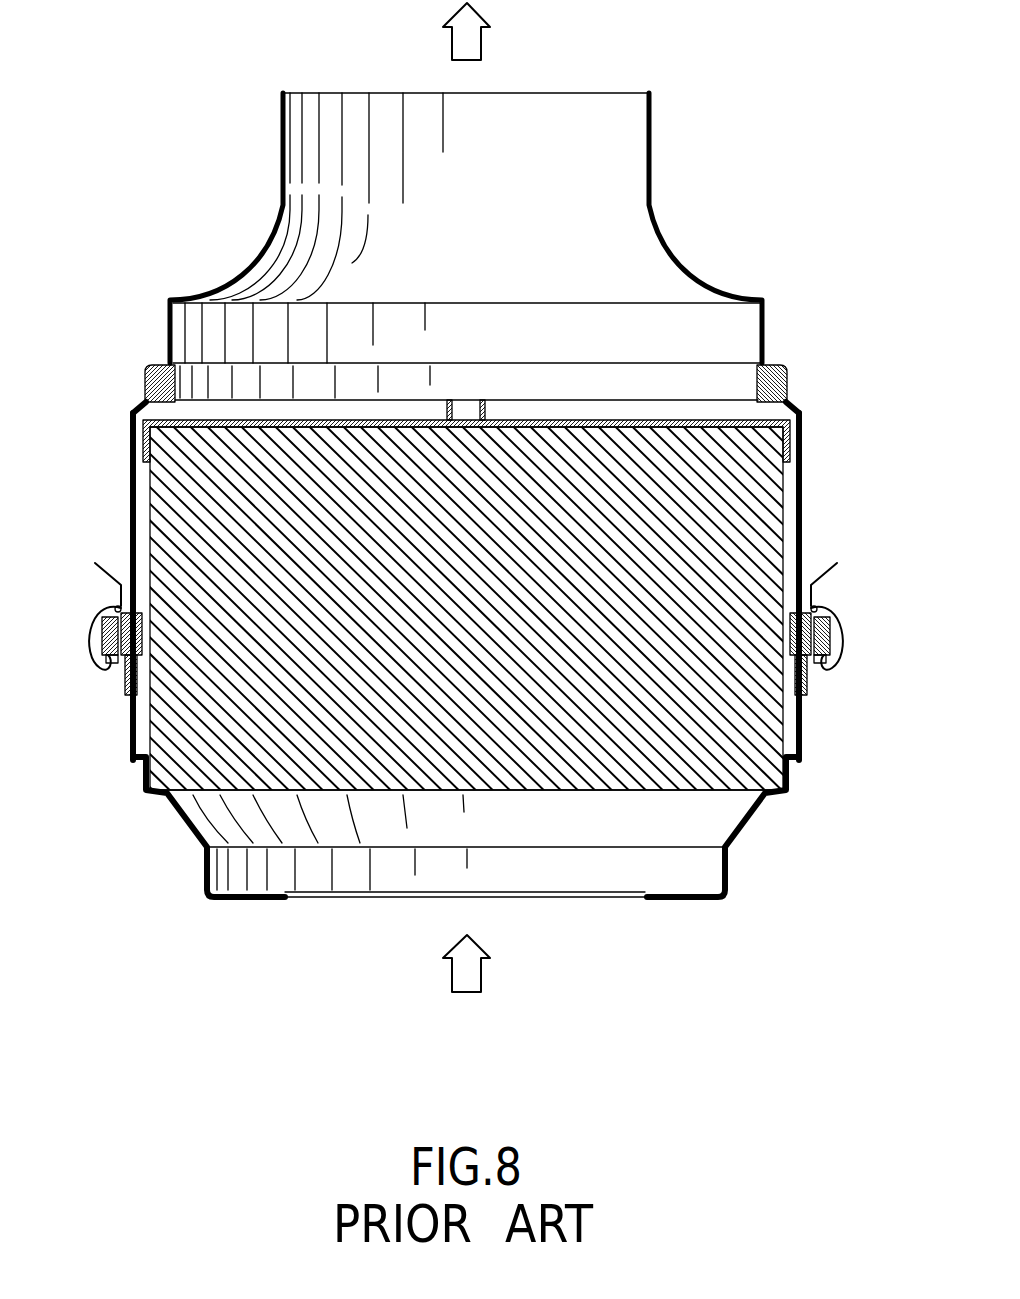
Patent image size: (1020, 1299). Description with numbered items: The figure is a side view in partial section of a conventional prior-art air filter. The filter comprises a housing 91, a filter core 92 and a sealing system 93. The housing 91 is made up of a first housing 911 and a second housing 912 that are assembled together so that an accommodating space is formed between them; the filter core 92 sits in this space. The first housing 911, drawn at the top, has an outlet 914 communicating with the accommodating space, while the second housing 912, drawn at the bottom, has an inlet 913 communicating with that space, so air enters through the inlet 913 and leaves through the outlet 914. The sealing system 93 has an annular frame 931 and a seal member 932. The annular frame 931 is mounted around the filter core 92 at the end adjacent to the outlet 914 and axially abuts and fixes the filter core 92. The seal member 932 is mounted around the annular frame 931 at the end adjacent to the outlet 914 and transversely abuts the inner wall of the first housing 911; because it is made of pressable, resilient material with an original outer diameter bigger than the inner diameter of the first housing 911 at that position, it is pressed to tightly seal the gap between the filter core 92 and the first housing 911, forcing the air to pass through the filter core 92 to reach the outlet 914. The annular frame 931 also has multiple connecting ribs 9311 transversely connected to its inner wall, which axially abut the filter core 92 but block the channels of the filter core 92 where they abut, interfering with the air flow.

The housing 91 is at (421, 491).
The first housing 911 is at (130, 490).
The second housing 912 is at (132, 742).
The inlet 913 is at (355, 879).
The outlet 914 is at (343, 117).
The filter core 92 is at (768, 518).
The sealing system 93 is at (514, 342).
The annular frame 931 is at (793, 412).
The seal member 932 is at (787, 370).
The connecting ribs 9311 is at (548, 420).